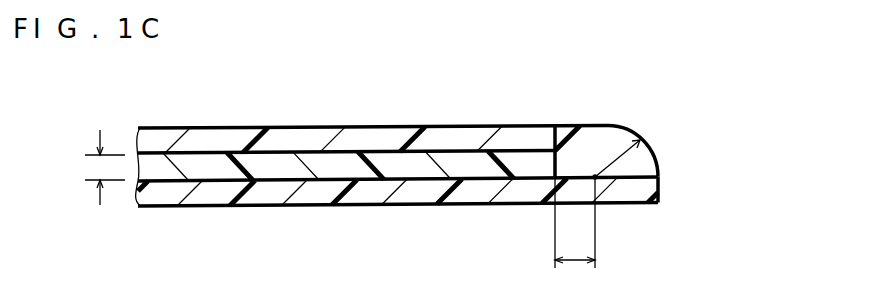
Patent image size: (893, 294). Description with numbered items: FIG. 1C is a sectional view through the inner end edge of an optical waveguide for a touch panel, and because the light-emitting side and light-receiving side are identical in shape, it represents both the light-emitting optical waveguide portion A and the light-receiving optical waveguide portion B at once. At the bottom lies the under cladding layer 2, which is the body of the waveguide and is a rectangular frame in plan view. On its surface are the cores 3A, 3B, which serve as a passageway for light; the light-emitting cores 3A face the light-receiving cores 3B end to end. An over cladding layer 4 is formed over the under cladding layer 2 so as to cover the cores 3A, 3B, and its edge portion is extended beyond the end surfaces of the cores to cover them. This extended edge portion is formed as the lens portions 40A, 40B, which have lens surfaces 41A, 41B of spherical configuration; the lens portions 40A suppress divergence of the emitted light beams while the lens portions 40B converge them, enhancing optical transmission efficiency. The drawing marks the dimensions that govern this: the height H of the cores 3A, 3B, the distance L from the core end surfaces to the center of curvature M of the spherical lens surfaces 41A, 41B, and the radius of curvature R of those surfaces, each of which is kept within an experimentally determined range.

The over cladding layer 4 is at (160, 140).
The light-emitting cores 3A is at (346, 128).
The light-receiving cores 3B is at (220, 163).
The under cladding layer 2 is at (202, 195).
The light-emitting optical waveguide portion A is at (474, 161).
The light-receiving optical waveguide portion B is at (474, 161).
The lens portion 40A is at (671, 125).
The lens portion 40B is at (652, 150).
The lens surface 41A is at (731, 163).
The lens surface 41B is at (650, 156).
The center of curvature M is at (595, 175).
The radius of curvature R is at (620, 149).
The height of the cores H is at (96, 167).
The distance from core end surfaces to center of curvature L is at (575, 222).